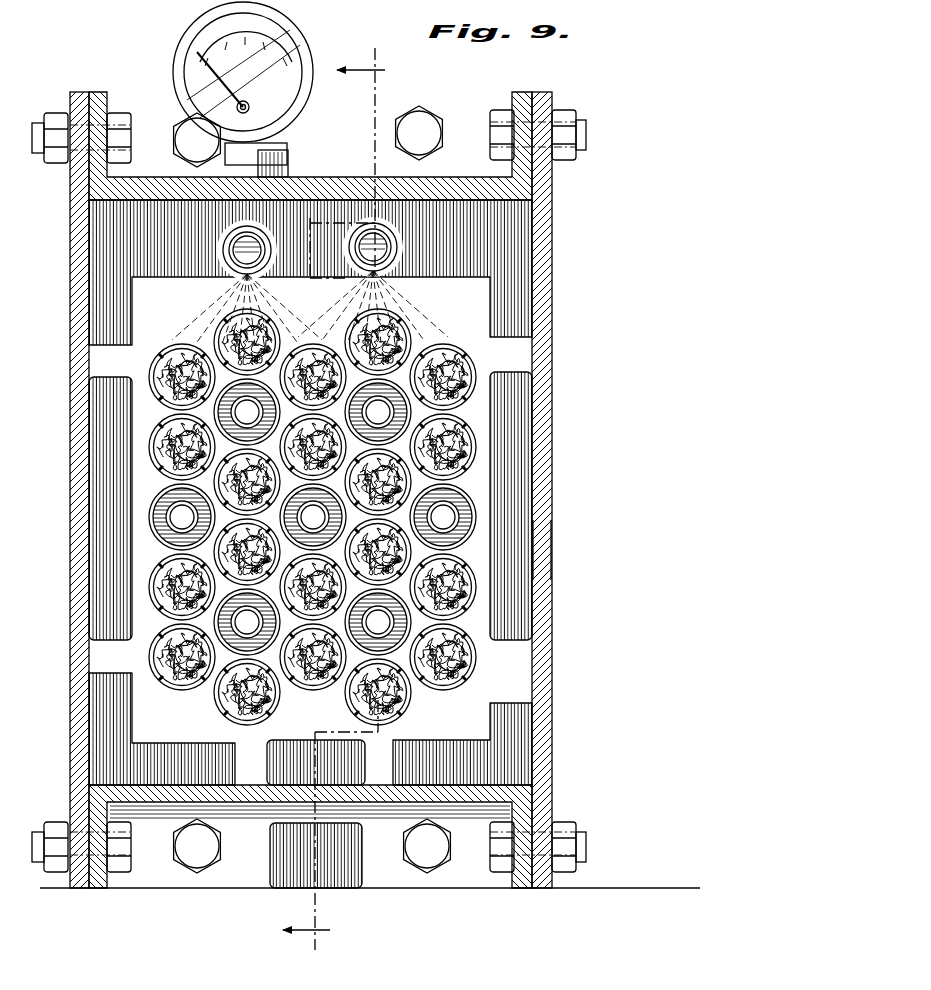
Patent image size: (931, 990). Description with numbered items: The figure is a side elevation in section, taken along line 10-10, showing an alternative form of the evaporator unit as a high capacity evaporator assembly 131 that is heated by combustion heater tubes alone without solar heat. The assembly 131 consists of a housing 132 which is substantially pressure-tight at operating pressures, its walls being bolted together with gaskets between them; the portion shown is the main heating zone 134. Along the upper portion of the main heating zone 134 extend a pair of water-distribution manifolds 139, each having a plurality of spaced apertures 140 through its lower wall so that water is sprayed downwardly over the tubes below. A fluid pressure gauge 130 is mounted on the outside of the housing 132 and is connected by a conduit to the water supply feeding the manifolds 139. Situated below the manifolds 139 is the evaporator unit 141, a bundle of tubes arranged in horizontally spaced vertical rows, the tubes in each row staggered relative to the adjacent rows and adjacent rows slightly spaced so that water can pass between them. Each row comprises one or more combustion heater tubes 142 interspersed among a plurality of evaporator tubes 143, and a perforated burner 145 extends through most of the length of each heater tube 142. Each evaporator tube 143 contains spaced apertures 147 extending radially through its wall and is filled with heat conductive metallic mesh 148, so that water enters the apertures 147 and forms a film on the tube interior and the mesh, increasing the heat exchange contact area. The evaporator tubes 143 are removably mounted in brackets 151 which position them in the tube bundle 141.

The section line 10- 10 is at (345, 499).
The fluid pressure gauge 130 is at (186, 57).
The high capacity evaporator assembly 131 is at (556, 292).
The housing 132 is at (553, 230).
The main heating zone 134 is at (542, 548).
The water-distribution manifold 139 is at (226, 242).
The spaced apertures 140 is at (232, 268).
The evaporator unit 141 is at (148, 534).
The combustion heater tube 142 is at (462, 516).
The evaporator tube 143 is at (152, 387).
The perforated burner 145 is at (172, 508).
The spaced apertures 147 is at (470, 352).
The heat conductive metallic mesh 148 is at (160, 350).
The bracket 151 is at (120, 305).